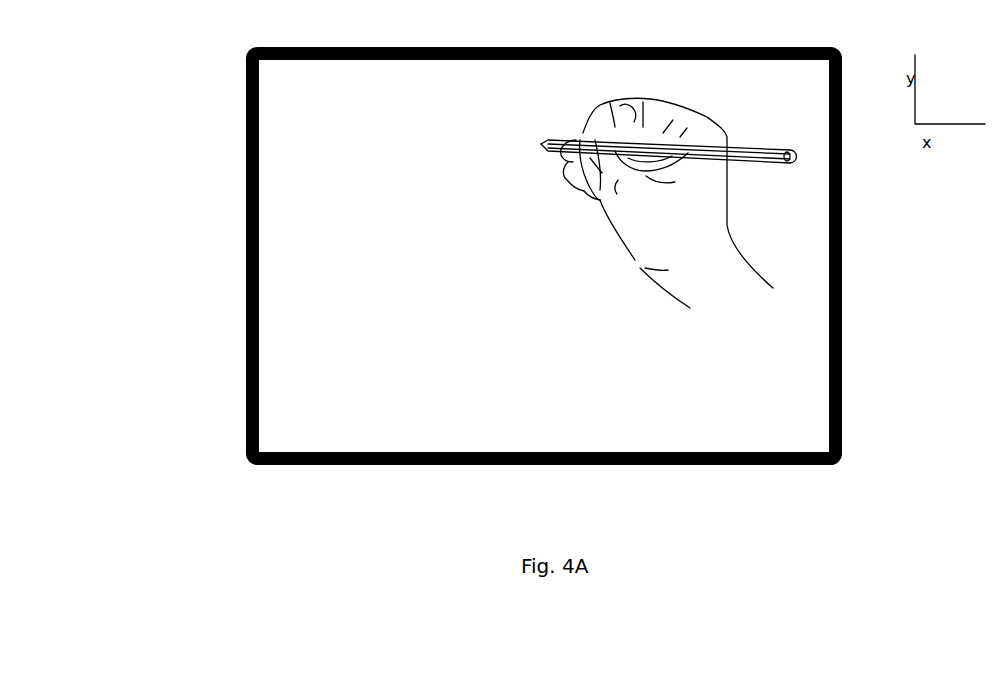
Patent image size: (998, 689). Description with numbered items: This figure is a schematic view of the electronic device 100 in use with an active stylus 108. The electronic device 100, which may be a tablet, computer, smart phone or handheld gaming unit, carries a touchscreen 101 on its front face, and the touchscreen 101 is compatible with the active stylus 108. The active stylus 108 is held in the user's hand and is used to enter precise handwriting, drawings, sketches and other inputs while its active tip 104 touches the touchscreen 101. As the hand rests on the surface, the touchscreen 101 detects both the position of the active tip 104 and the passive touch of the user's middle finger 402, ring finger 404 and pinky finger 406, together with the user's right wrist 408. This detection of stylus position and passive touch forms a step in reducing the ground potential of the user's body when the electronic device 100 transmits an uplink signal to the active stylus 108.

The electronic device 100 is at (196, 96).
The touchscreen 101 is at (314, 99).
The active tip 104 is at (546, 138).
The active stylus 108 is at (765, 151).
The user's middle finger 402 is at (568, 163).
The user's ring finger 404 is at (570, 182).
The user's pinky finger 406 is at (587, 188).
The user's right wrist 408 is at (650, 270).